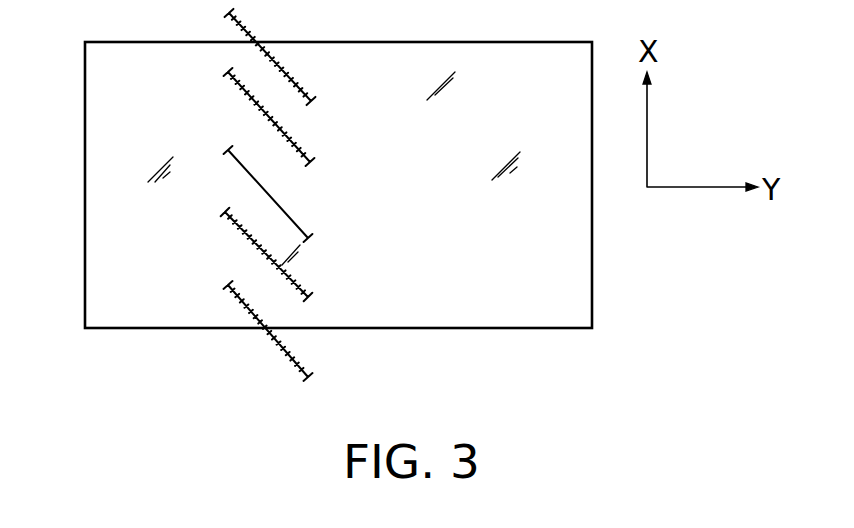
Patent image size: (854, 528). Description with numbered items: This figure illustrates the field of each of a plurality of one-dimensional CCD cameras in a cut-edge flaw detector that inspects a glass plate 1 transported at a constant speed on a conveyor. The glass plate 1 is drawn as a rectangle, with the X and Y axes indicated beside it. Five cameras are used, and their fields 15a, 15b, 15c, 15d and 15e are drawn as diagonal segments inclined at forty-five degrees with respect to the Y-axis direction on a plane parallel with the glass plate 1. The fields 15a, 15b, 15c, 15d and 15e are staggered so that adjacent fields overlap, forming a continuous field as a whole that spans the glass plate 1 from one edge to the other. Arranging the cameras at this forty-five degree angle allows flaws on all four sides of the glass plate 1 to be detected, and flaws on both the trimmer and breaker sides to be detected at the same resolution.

The glass plate 1 is at (138, 312).
The field 15a is at (284, 72).
The field 15b is at (303, 147).
The field 15c is at (297, 220).
The field 15d is at (302, 283).
The field 15e is at (307, 360).